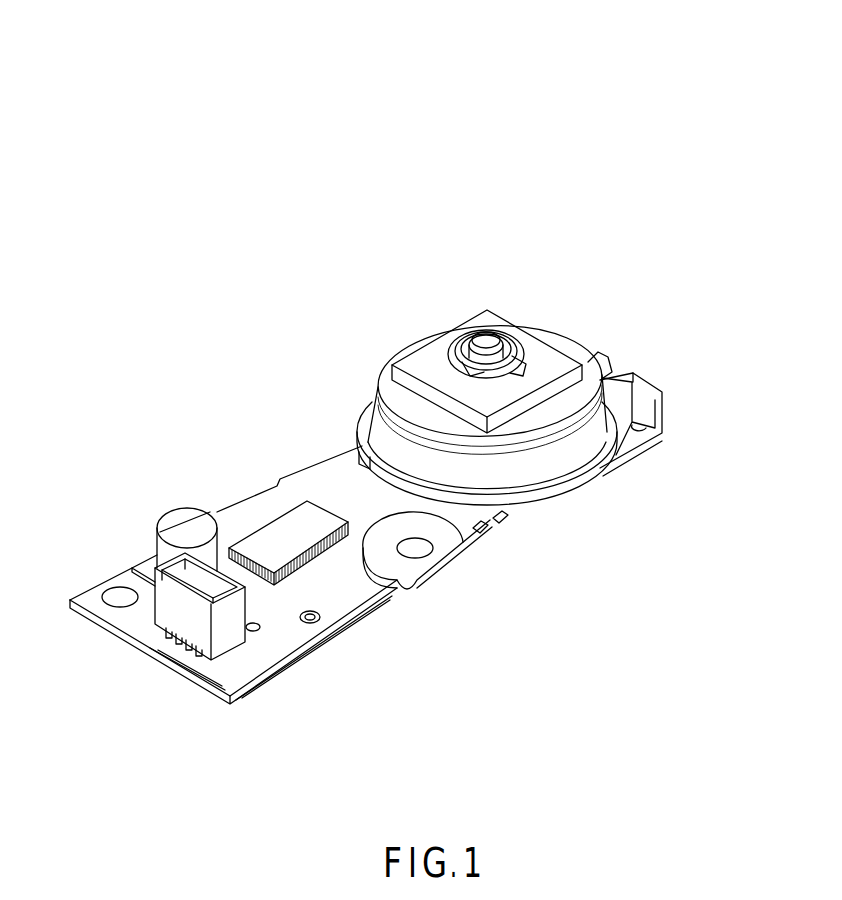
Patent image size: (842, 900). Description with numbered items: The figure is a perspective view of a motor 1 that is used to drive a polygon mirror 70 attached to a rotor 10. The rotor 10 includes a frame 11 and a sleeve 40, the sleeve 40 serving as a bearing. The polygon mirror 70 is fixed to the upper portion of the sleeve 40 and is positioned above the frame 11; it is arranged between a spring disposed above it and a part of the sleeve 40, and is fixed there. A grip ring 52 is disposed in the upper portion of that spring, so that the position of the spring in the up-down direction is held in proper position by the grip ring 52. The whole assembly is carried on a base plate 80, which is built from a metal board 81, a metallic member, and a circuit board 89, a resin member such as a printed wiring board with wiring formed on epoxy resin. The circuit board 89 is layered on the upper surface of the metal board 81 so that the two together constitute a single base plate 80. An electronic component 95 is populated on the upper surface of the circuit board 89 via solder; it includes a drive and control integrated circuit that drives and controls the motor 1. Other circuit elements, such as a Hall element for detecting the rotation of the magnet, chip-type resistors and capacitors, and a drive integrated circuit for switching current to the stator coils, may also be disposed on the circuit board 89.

The motor 1 is at (29, 40).
The rotor 10 is at (399, 328).
The frame 11 is at (562, 457).
The sleeve 40 is at (503, 333).
The grip ring 52 is at (463, 332).
The polygon mirror 70 is at (545, 352).
The base plate 80 is at (583, 630).
The metal board 81 is at (452, 541).
The circuit board 89 is at (363, 590).
The electronic component 95 is at (274, 514).